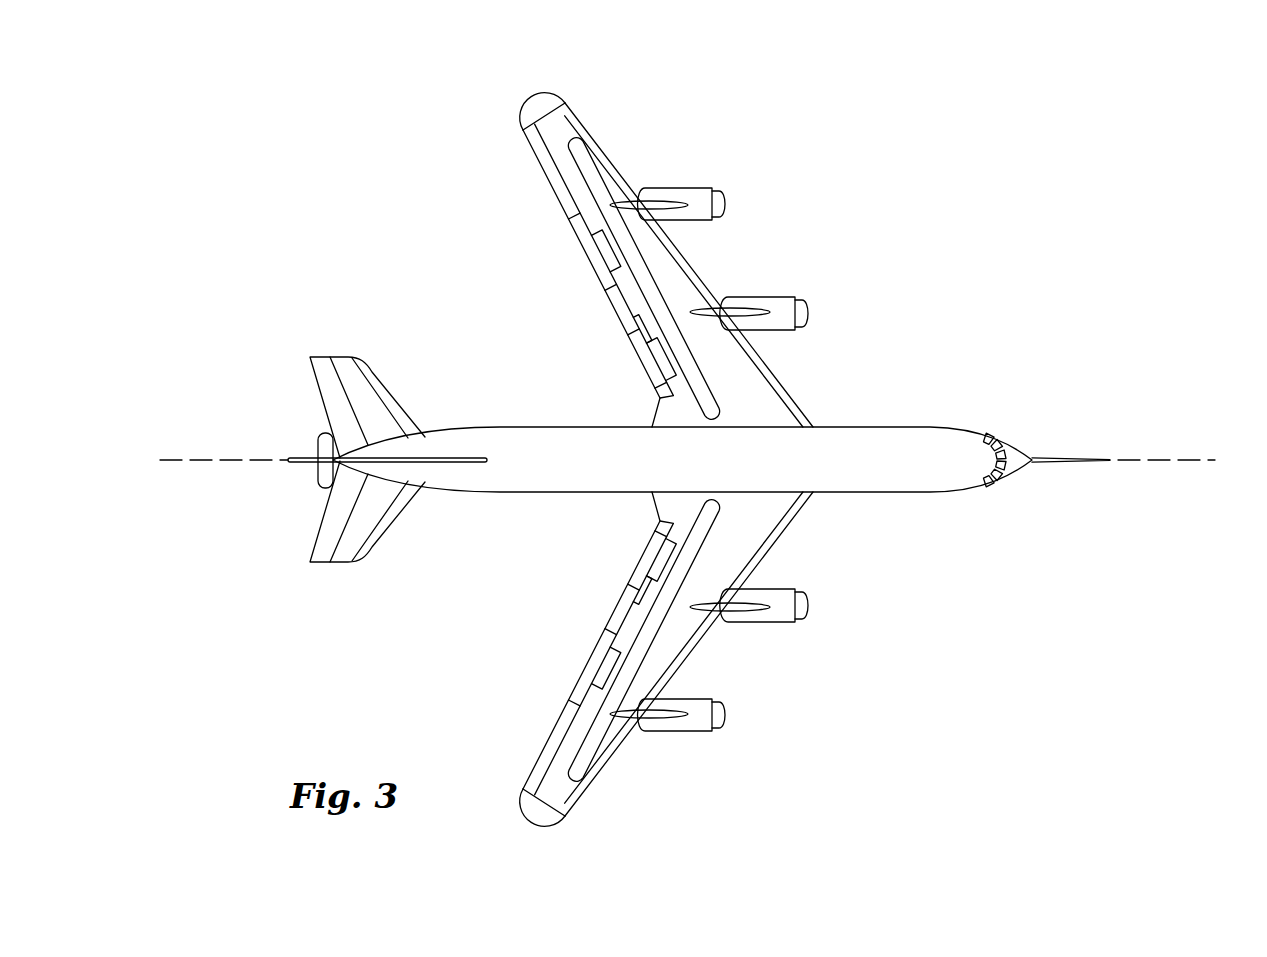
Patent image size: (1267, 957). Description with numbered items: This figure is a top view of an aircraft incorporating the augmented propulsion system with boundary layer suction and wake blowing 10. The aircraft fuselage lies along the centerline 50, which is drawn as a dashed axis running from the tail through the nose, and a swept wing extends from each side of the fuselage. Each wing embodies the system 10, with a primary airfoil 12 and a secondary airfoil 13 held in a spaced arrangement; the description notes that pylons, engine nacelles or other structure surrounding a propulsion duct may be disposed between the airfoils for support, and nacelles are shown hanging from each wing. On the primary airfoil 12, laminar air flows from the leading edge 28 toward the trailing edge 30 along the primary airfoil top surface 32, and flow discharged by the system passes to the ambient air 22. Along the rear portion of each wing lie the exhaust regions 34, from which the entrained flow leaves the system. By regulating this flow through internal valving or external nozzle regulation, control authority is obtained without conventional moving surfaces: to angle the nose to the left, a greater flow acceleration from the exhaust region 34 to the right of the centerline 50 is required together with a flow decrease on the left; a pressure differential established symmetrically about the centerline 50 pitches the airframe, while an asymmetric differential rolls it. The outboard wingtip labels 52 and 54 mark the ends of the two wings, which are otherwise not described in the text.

The augmented propulsion system with boundary layer suction and wake blowing 10 is at (934, 180).
The primary airfoil 12 is at (723, 540).
The secondary airfoil 13 is at (690, 654).
The ambient air 22 is at (648, 743).
The leading edge 28 is at (690, 265).
The trailing edge 30 is at (592, 266).
The primary airfoil top surface 32 is at (723, 377).
The exhaust region 34 is at (594, 236).
The centerline 50 is at (706, 462).
The first wingtip 52 is at (591, 62).
The second wingtip 54 is at (591, 879).